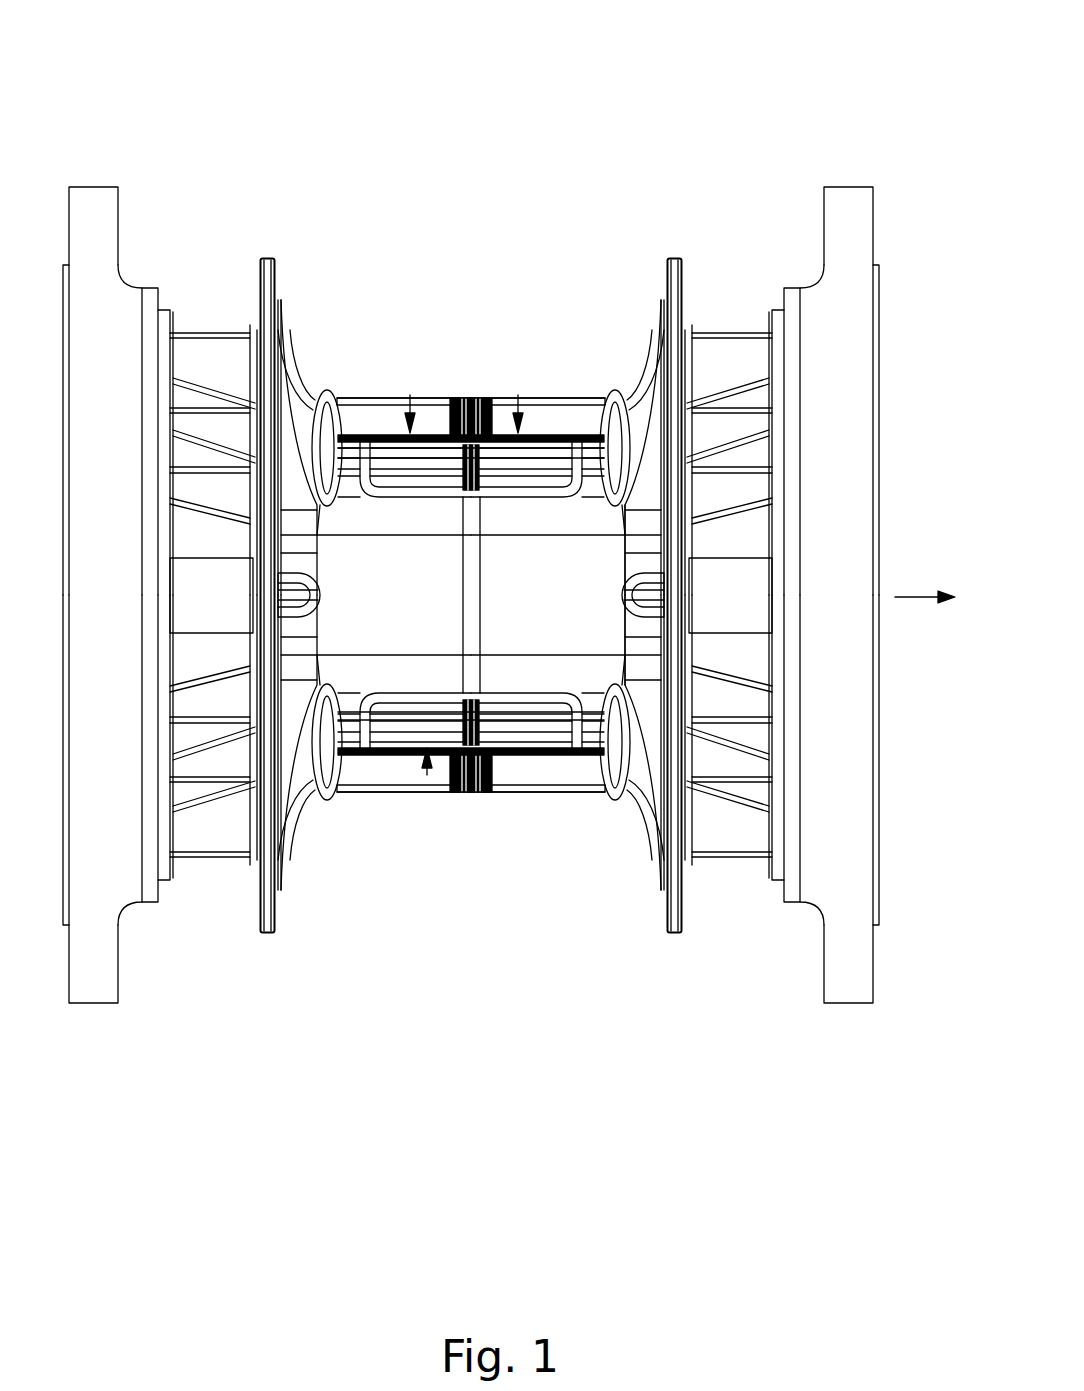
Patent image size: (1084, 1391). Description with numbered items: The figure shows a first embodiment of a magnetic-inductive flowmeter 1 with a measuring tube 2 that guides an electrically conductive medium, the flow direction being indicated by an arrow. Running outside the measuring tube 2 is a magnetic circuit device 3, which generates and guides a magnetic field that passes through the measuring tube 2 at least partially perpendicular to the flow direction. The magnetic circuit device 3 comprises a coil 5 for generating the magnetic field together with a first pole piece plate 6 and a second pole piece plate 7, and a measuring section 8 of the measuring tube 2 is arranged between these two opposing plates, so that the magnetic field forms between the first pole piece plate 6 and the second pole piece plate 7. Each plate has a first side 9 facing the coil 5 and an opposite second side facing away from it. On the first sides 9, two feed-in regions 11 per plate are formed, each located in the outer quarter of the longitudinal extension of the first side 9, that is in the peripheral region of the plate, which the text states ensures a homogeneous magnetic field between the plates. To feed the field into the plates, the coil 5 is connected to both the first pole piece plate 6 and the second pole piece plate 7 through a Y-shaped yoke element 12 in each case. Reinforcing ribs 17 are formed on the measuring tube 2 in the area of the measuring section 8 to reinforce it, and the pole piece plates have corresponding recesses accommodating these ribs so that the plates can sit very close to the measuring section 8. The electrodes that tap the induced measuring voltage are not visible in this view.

The magnetic-inductive flowmeter 1 is at (118, 104).
The measuring tube 2 is at (280, 258).
The magnetic circuit device 3 is at (438, 442).
The coil 5 is at (473, 640).
The first pole piece plate 6 is at (410, 395).
The second pole piece plate 7 is at (500, 755).
The measuring section 8 is at (471, 895).
The first side 9 is at (365, 400).
The feed-in regions 11 is at (357, 577).
The Y-shaped yoke element 12 is at (518, 395).
The reinforcing ribs 17 is at (588, 420).